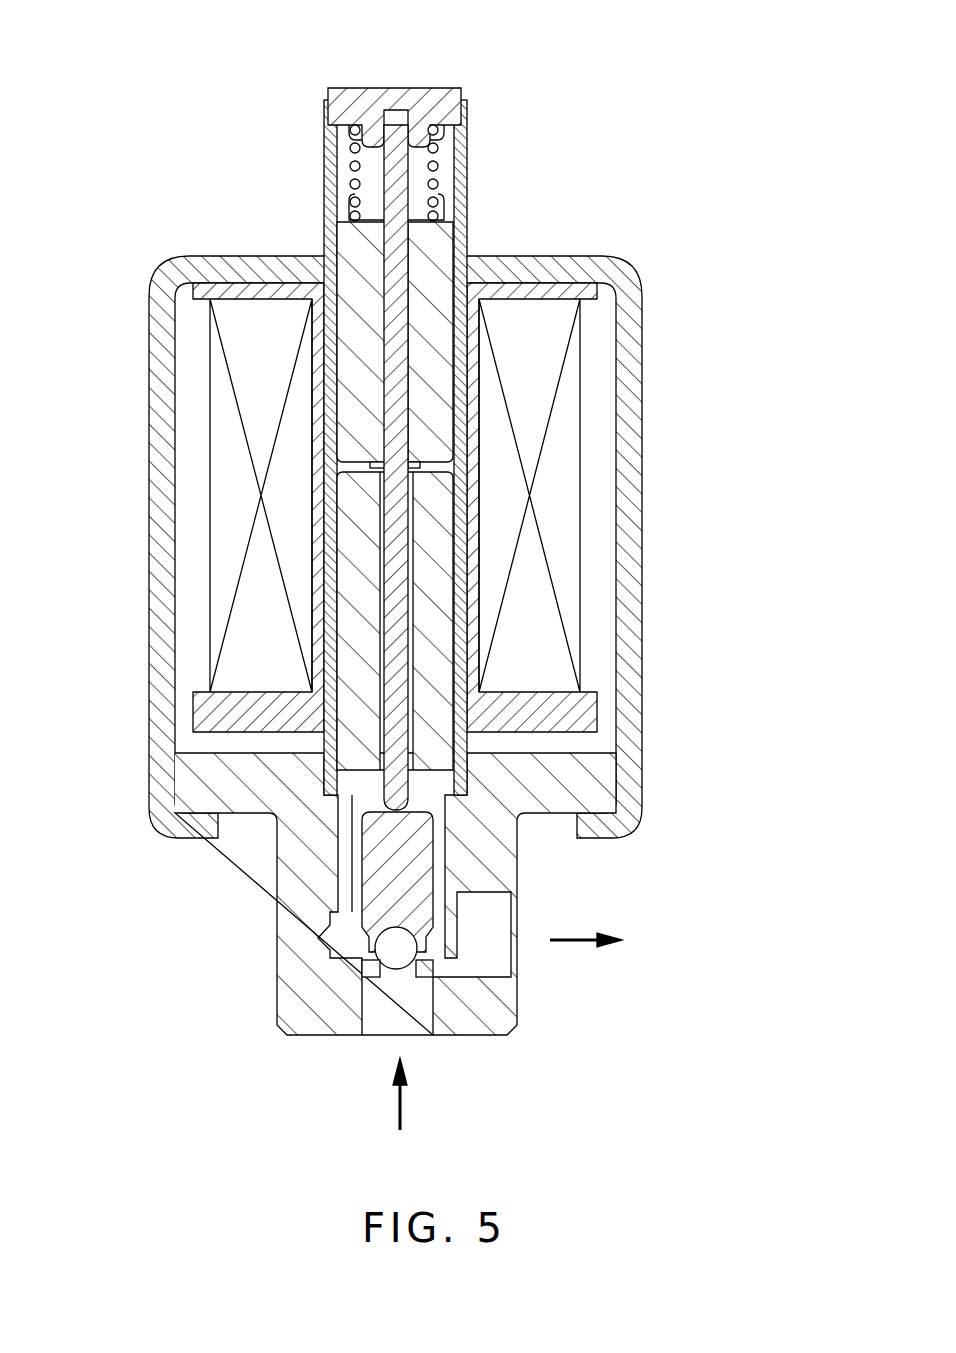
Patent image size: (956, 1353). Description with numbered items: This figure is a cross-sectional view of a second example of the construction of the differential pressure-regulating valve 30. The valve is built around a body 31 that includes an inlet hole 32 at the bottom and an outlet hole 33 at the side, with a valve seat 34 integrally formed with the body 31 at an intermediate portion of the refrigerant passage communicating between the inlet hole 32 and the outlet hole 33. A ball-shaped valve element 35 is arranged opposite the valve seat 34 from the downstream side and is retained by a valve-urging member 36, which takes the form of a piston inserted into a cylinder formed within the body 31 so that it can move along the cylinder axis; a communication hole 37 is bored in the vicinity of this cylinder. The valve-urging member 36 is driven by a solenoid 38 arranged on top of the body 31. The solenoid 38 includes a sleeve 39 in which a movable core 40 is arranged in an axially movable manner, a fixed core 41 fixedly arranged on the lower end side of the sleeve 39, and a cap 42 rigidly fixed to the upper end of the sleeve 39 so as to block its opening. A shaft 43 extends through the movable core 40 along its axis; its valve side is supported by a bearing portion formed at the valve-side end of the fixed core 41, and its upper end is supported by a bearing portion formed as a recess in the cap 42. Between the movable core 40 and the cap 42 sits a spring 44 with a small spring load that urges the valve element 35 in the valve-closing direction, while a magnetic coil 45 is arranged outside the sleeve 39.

The differential pressure-regulating valve 30 is at (545, 108).
The body 31 is at (498, 848).
The inlet hole 32 is at (418, 1034).
The outlet hole 33 is at (505, 955).
The valve seat 34 is at (370, 975).
The valve element 35 is at (390, 947).
The valve-urging member 36 is at (415, 878).
The communication hole 37 is at (343, 873).
The solenoid 38 is at (648, 395).
The sleeve 39 is at (450, 789).
The movable core 40 is at (435, 242).
The fixed core 41 is at (445, 605).
The cap 42 is at (395, 88).
The shaft 43 is at (400, 563).
The spring 44 is at (432, 180).
The magnetic coil 45 is at (565, 437).